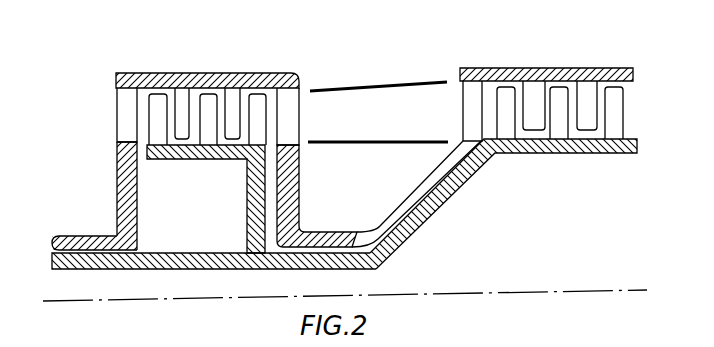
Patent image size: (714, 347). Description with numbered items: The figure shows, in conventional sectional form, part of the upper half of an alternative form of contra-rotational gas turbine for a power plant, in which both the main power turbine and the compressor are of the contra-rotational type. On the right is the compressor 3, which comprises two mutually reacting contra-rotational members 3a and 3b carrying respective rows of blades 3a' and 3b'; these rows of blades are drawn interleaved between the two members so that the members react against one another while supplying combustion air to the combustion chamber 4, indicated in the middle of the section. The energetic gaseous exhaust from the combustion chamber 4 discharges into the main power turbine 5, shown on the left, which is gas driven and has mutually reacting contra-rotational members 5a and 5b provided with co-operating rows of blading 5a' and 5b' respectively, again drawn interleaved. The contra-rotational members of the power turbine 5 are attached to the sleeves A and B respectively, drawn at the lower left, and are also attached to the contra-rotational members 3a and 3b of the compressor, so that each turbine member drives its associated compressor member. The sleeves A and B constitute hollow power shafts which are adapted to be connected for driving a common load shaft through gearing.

The main power turbine 5 is at (124, 66).
The contra-rotational member of power turbine 5a is at (206, 199).
The row of blading 5a' is at (207, 146).
The contra-rotational member of power turbine 5b is at (207, 63).
The row of blading 5b' is at (207, 84).
The compressor 3 is at (572, 64).
The contra-rotational member of compressor 3a is at (503, 204).
The row of blades 3a' is at (560, 144).
The contra-rotational member of compressor 3b is at (546, 61).
The row of blades 3b' is at (560, 66).
The combustion chamber 4 is at (390, 126).
The sleeve A is at (97, 270).
The sleeve B is at (88, 238).